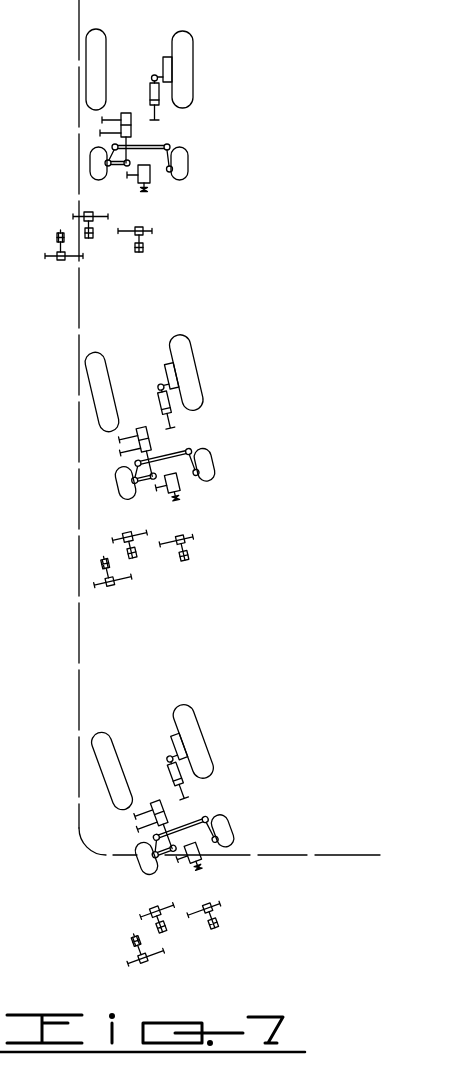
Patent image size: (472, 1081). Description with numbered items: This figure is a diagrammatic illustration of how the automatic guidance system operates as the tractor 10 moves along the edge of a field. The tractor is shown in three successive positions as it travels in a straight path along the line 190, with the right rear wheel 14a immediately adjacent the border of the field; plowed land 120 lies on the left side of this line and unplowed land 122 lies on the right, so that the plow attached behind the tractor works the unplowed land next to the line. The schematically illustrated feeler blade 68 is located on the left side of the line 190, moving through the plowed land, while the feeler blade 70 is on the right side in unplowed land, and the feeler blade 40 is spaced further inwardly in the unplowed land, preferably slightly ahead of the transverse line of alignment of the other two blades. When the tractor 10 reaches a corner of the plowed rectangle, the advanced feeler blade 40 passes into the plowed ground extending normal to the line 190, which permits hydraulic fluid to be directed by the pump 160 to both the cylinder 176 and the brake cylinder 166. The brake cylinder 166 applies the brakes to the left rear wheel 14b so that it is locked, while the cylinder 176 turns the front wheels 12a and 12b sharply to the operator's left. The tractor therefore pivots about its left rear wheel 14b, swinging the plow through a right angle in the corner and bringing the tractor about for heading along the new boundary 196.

The tractor 10 is at (203, 60).
The front wheel 12a is at (92, 163).
The front wheel 12b is at (185, 160).
The right rear wheel 14a is at (98, 35).
The left rear wheel 14b is at (185, 37).
The feeler blade 40 is at (144, 254).
The feeler blade 68 is at (55, 238).
The feeler blade 70 is at (92, 241).
The plowed land 120 is at (30, 405).
The unplowed land 122 is at (195, 307).
The pump 160 is at (150, 173).
The brake cylinder 166 is at (157, 107).
The cylinder 176 is at (125, 113).
The line 190 is at (77, 305).
The new boundary 196 is at (283, 855).